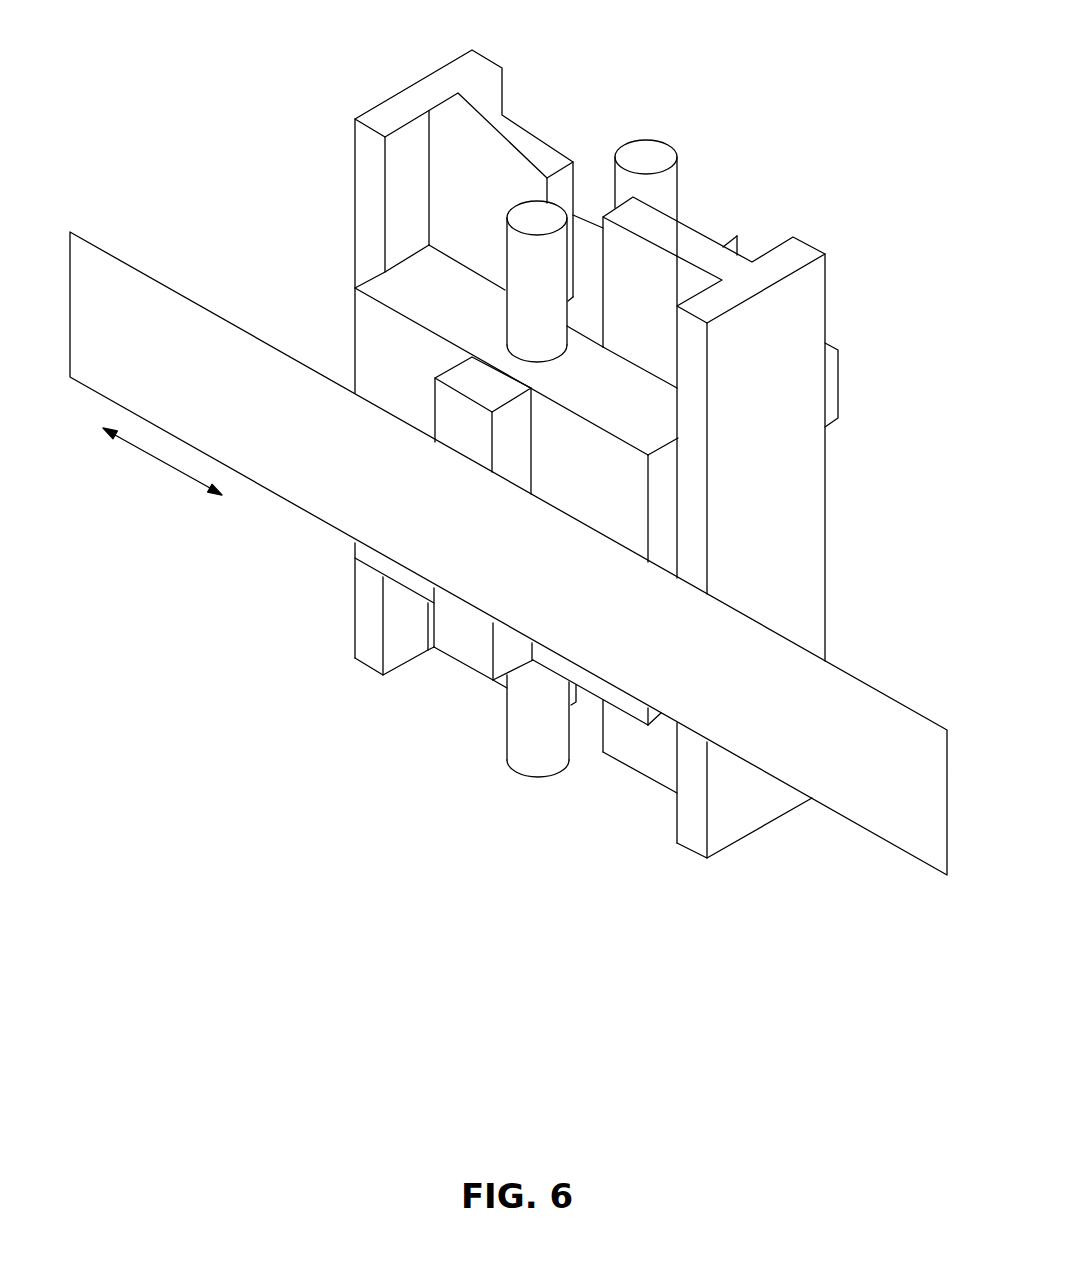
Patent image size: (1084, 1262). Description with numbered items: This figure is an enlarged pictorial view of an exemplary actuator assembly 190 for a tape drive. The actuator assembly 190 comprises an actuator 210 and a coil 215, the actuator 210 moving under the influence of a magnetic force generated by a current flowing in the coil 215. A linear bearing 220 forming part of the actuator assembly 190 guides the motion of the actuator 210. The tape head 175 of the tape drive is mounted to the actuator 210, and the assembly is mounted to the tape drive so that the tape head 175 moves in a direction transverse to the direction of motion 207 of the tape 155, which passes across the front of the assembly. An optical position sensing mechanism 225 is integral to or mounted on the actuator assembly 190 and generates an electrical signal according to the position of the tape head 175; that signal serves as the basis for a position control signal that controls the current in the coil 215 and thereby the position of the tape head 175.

The tape 155 is at (319, 528).
The tape head 175 is at (467, 648).
The actuator assembly 190 is at (316, 116).
The direction of motion 207 is at (163, 462).
The actuator 210 is at (397, 288).
The coil 215 is at (732, 825).
The linear bearing 220 is at (523, 218).
The optical position sensing mechanism 225 is at (845, 383).